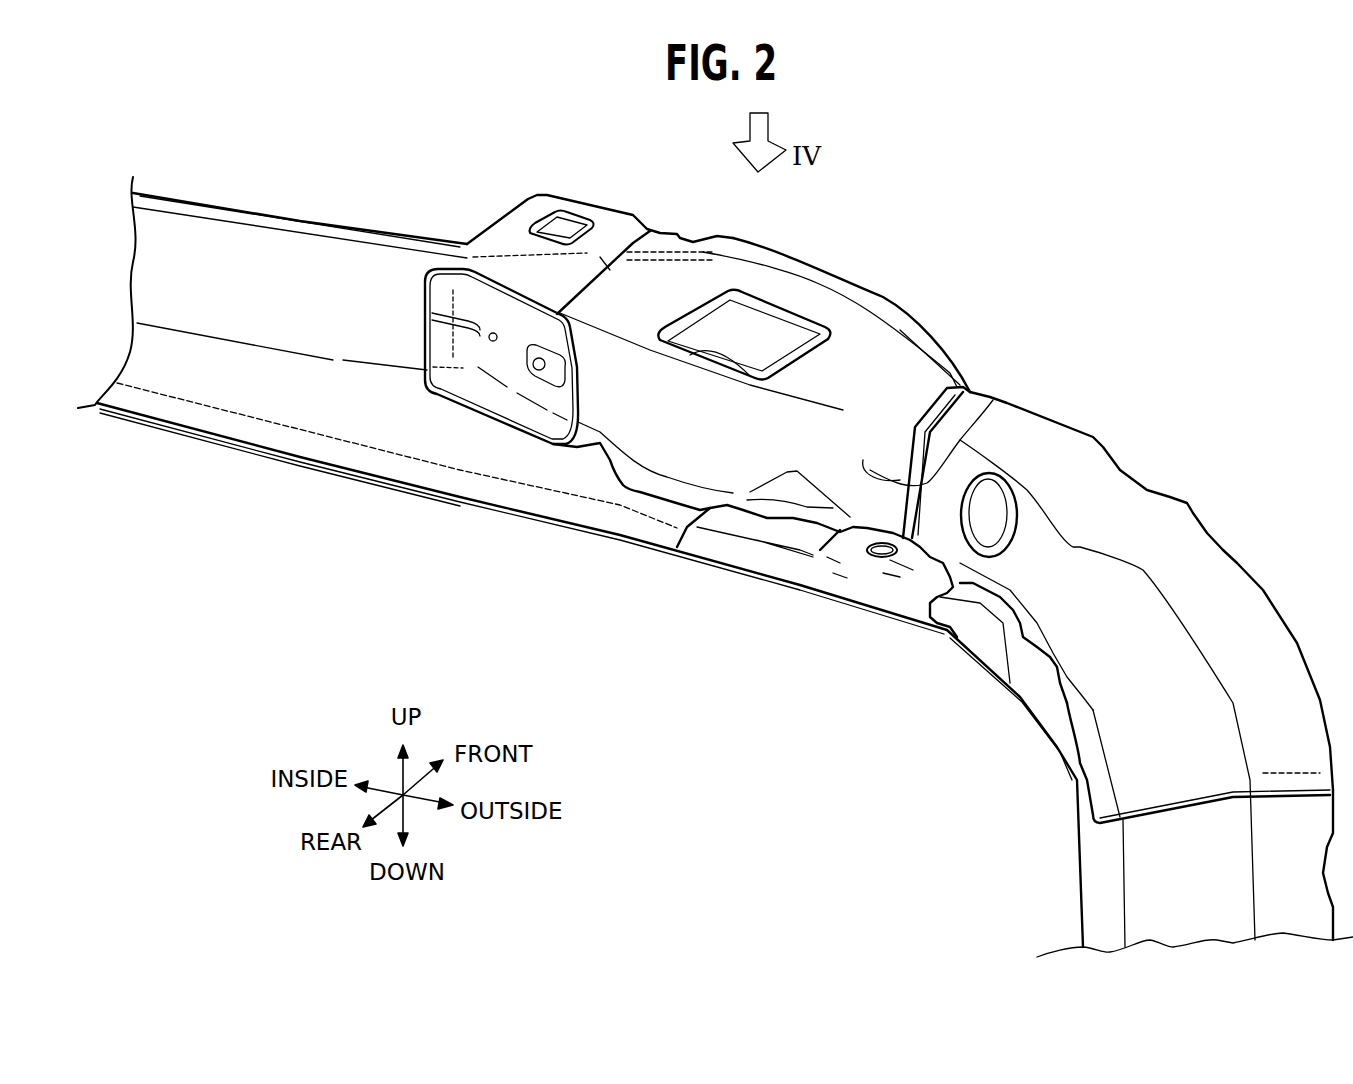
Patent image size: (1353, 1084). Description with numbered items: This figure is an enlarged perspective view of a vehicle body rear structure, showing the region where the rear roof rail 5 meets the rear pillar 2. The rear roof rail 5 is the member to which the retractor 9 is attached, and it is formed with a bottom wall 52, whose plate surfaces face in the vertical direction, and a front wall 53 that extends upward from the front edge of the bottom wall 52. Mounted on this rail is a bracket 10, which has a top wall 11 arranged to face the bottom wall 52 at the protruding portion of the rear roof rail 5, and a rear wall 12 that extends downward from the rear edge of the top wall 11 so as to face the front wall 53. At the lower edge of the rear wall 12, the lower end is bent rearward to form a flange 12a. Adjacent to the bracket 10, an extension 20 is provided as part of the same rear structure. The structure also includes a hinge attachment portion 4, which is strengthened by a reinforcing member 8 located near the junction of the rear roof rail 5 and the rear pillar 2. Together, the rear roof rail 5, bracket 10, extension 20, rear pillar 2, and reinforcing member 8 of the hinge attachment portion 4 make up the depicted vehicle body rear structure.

The rear pillar 2 is at (1213, 553).
The hinge attachment portion 4 is at (907, 563).
The rear roof rail 5 is at (203, 188).
The reinforcing member 8 is at (773, 557).
The retractor 9 is at (767, 337).
The bracket 10 is at (917, 367).
The top wall 11 is at (687, 277).
The rear wall 12 is at (980, 400).
The flange 12a is at (640, 473).
The extension 20 is at (467, 300).
The bottom wall 52 is at (208, 420).
The front wall 53 is at (311, 223).